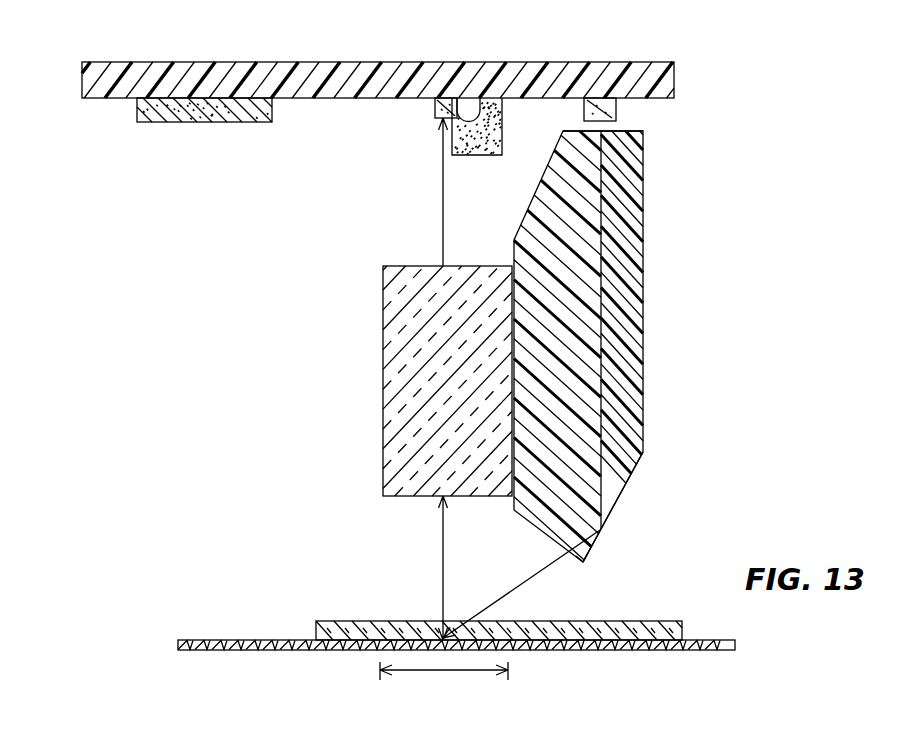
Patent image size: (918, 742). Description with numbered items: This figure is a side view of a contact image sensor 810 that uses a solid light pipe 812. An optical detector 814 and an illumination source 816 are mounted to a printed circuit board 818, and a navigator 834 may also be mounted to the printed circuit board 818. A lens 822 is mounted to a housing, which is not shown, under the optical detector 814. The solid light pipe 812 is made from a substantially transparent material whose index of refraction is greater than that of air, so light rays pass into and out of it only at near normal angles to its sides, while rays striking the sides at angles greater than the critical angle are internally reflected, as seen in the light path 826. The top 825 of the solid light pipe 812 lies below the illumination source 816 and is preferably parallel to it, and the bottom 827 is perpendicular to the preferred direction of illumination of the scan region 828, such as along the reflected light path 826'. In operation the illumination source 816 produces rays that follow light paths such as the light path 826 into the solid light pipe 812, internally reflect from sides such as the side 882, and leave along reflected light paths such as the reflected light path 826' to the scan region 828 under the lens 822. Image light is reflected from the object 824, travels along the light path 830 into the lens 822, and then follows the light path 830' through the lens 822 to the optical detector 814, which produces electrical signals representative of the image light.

The contact image sensor 810 is at (100, 161).
The solid light pipe 812 is at (643, 252).
The optical detector 814 is at (417, 113).
The illumination source 816 is at (647, 113).
The printed circuit board 818 is at (240, 62).
The lens 822 is at (383, 330).
The object 824 is at (698, 640).
The top of the solid light pipe 825 is at (632, 131).
The light path 826 is at (652, 330).
The reflected light path 826' is at (521, 584).
The bottom of the solid light pipe 827 is at (578, 560).
The scan region 828 is at (438, 672).
The light path 830 is at (415, 568).
The light path 830' is at (415, 192).
The navigator 834 is at (180, 124).
The side of the solid light pipe 882 is at (622, 488).